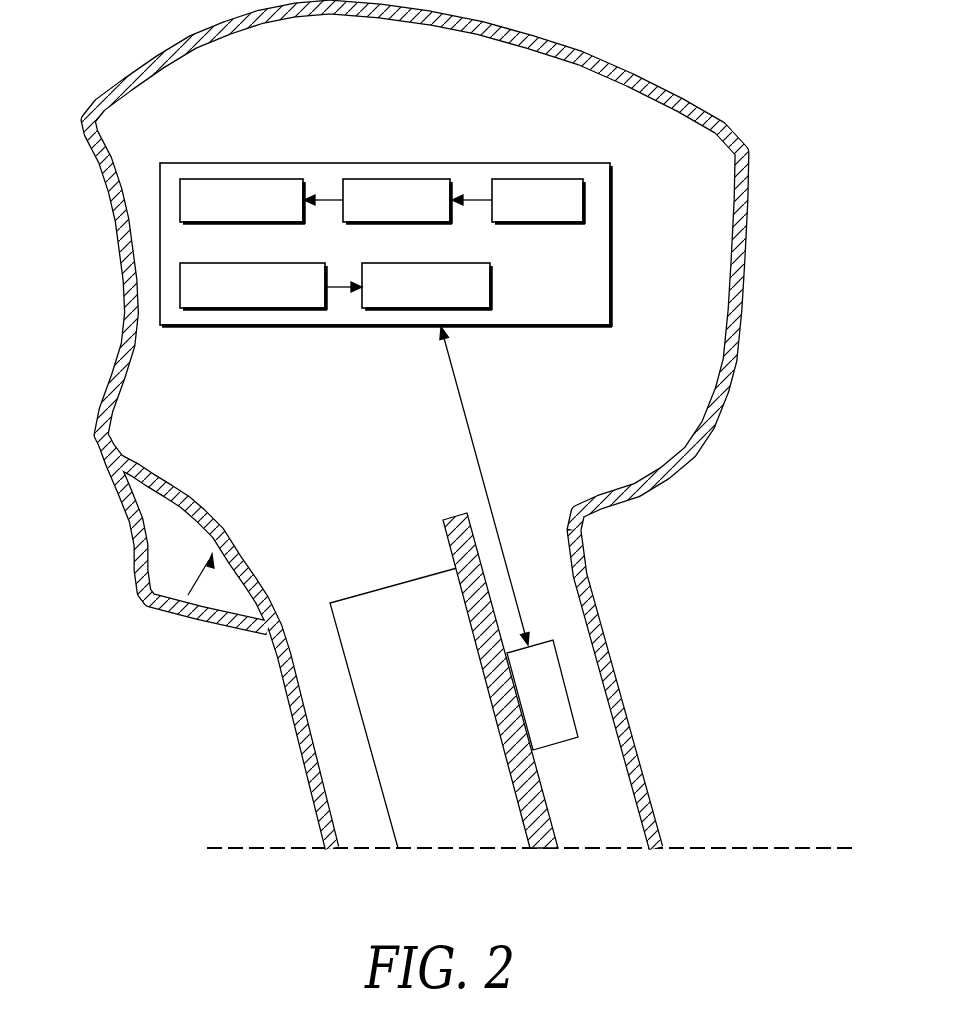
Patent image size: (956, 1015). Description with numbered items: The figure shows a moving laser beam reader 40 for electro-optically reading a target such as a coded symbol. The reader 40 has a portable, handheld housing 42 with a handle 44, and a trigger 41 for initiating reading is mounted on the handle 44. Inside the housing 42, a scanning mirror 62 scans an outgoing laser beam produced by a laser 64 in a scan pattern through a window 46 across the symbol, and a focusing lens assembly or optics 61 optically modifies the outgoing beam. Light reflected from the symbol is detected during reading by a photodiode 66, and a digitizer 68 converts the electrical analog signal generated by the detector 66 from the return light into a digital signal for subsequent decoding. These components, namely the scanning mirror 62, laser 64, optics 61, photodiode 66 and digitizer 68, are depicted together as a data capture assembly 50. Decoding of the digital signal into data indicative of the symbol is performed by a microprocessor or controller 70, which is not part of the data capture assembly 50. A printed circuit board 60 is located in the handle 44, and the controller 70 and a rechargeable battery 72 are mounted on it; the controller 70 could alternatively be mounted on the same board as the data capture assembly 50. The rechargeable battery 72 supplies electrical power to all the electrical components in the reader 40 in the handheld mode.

The moving laser beam reader 40 is at (775, 165).
The trigger 41 is at (133, 587).
The housing 42 is at (745, 245).
The handle 44 is at (598, 626).
The window 46 is at (120, 233).
The data capture assembly 50 is at (384, 162).
The printed circuit board 60 is at (456, 514).
The optics 61 is at (437, 226).
The scanning mirror 62 is at (277, 226).
The laser 64 is at (537, 226).
The photodiode 66 is at (221, 262).
The digitizer 68 is at (492, 298).
The controller 70 is at (556, 747).
The rechargeable battery 72 is at (393, 583).